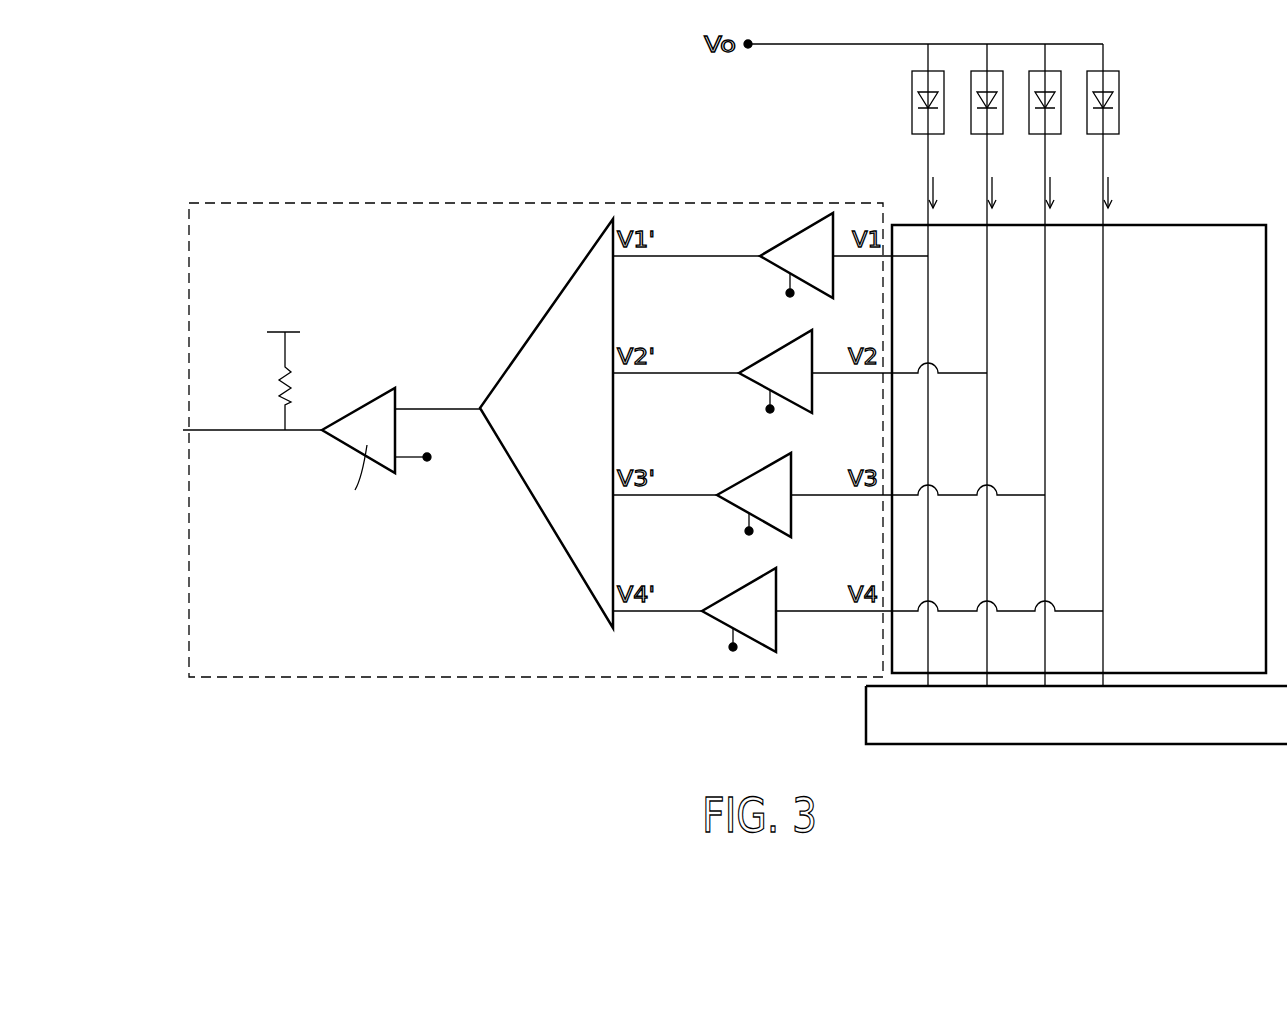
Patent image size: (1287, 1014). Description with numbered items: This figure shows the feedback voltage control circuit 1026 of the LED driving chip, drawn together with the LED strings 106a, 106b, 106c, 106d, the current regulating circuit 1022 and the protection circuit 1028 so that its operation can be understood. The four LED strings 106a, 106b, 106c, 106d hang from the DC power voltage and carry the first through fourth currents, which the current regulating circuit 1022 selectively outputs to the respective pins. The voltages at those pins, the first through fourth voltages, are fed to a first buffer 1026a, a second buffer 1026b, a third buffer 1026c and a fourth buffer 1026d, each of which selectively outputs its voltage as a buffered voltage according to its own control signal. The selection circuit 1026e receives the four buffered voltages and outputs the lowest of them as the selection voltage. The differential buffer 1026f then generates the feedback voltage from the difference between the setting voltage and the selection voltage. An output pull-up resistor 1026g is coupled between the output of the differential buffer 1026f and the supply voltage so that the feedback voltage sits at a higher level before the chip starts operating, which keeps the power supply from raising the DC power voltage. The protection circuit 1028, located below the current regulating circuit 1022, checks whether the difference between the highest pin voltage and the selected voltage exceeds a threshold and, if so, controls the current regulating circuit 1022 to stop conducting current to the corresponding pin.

The feedback voltage control circuit 1026 is at (495, 202).
The first buffer 1026a is at (786, 247).
The second buffer 1026b is at (766, 363).
The third buffer 1026c is at (742, 487).
The fourth buffer 1026d is at (727, 600).
The selection circuit 1026e is at (524, 338).
The differential buffer 1026f is at (363, 398).
The output pull-up resistor 1026g is at (281, 381).
The LED string 106a is at (940, 134).
The LED string 106b is at (999, 134).
The LED string 106c is at (1057, 134).
The LED string 106d is at (1115, 134).
The current regulating circuit 1022 is at (1240, 212).
The protection circuit 1028 is at (1145, 745).